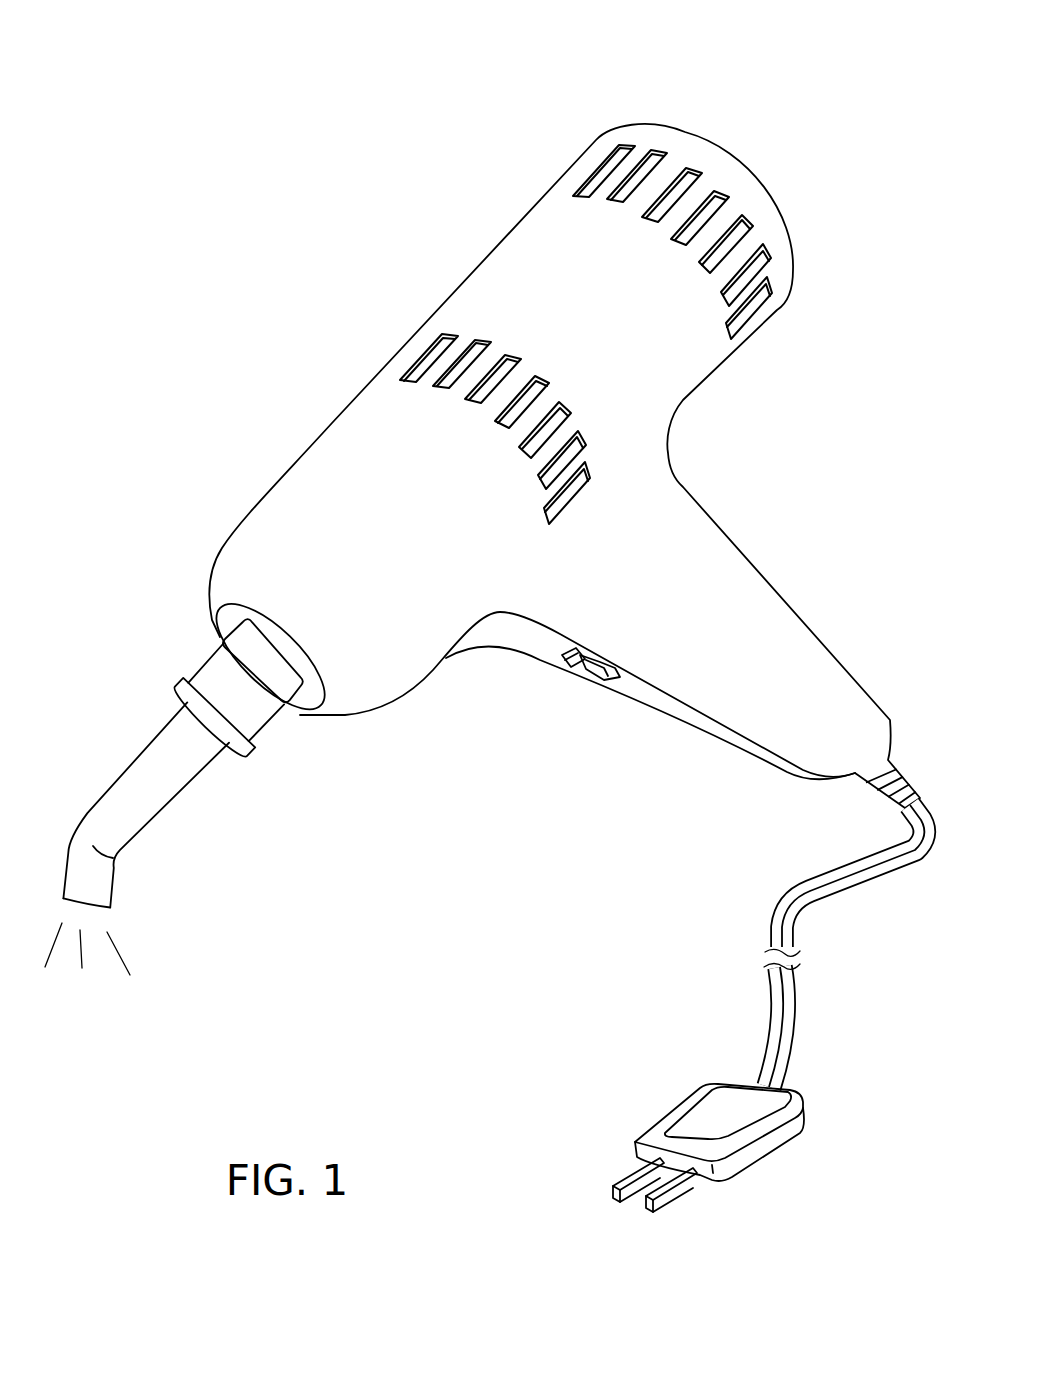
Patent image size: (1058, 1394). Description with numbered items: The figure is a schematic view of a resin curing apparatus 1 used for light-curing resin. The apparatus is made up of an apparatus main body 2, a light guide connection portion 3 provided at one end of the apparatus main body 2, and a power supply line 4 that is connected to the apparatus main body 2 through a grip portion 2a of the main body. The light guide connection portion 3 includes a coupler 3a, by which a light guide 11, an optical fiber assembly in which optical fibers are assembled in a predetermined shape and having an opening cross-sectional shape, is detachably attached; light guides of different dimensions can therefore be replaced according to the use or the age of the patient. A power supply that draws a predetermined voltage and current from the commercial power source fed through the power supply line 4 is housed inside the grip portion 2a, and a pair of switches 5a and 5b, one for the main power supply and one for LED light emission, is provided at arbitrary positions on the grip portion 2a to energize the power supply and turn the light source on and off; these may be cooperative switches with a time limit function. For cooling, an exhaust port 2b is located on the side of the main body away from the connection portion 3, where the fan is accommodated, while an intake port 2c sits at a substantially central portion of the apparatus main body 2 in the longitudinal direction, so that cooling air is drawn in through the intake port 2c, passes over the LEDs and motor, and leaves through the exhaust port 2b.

The resin curing apparatus 1 is at (556, 143).
The apparatus main body 2 is at (464, 334).
The grip portion 2a is at (737, 572).
The exhaust port 2b is at (770, 213).
The intake port 2c is at (433, 350).
The light guide connection portion 3 is at (307, 697).
The coupler 3a is at (241, 643).
The power supply line 4 is at (800, 900).
The switch (for the main power supply) 5a is at (590, 680).
The switch (for LED light emission) 5b is at (560, 667).
The light guide 11 is at (140, 831).